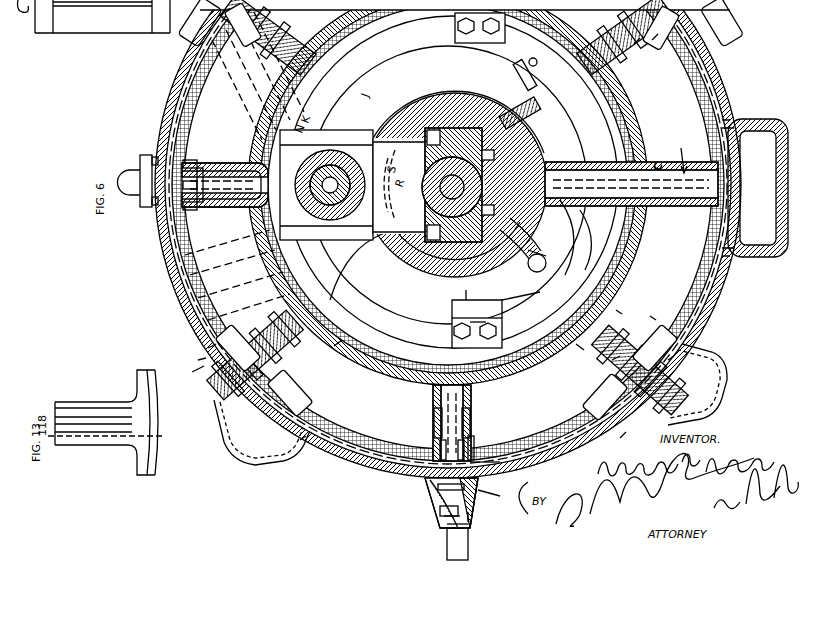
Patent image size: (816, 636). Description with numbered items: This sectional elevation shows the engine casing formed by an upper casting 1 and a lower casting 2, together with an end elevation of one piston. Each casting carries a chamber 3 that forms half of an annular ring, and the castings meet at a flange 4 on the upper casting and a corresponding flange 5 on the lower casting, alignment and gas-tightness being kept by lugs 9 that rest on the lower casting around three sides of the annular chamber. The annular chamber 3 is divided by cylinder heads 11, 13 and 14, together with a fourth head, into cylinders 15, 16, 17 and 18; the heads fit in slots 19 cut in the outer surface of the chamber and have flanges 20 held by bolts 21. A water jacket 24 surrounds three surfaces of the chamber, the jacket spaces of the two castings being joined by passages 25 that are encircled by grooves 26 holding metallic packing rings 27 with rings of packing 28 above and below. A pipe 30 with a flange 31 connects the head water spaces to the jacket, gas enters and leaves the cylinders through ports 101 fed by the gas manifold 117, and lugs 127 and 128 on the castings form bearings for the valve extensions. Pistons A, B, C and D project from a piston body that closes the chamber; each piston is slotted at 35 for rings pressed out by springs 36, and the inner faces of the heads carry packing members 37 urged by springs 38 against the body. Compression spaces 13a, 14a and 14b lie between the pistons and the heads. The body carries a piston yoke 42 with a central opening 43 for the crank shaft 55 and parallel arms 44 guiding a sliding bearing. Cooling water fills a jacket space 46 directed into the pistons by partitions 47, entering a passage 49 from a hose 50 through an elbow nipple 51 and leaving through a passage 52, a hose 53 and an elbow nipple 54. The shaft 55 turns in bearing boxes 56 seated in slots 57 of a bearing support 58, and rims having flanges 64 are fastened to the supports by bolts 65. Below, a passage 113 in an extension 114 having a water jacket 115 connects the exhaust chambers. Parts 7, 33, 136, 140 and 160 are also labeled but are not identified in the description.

In FIG. 6, the upper casting 1 is at (180, 306).
In FIG. 6, the lower casting 2 is at (716, 310).
In FIG. 6, the annular chamber 3 is at (418, 208).
In FIG. 6, the flange 4 is at (454, 515).
In FIG. 6, the flange 5 is at (500, 416).
In FIG. 6, the drain box 7 is at (457, 544).
In FIG. 6, the lugs 9 is at (472, 428).
In FIG. 6, the cylinder head 11 is at (389, 228).
In FIG. 6, the cylinder head 13 is at (610, 52).
In FIG. 6, the compression space 13a is at (640, 39).
In FIG. 6, the cylinder head 14 is at (256, 56).
In FIG. 6, the compression space 14a is at (609, 315).
In FIG. 6, the compression space 14b is at (643, 319).
In FIG. 6, the cylinder 15 is at (212, 220).
In FIG. 13, the cylinder 15 is at (146, 424).
In FIG. 6, the cylinder 16 is at (478, 498).
In FIG. 6, the cylinder 17 is at (459, 192).
In FIG. 6, the cylinder 18 is at (486, 447).
In FIG. 6, the slots 19 is at (206, 348).
In FIG. 6, the flanges 20 is at (196, 360).
In FIG. 6, the bolts 21 is at (190, 374).
In FIG. 6, the water jacket 24 is at (174, 114).
In FIG. 6, the passages 25 is at (434, 488).
In FIG. 6, the grooves 26 is at (448, 526).
In FIG. 6, the metallic packing rings 27 is at (470, 524).
In FIG. 6, the rings of packing 28 is at (438, 510).
In FIG. 6, the pipe 30 is at (461, 232).
In FIG. 6, the flanges 31 is at (300, 446).
In FIG. 6, the bolt 33 is at (508, 424).
In FIG. 6, the slots 35 is at (208, 148).
In FIG. 13, the slots 35 is at (80, 406).
In FIG. 6, the springs 36 is at (224, 164).
In FIG. 6, the packing members 37 is at (332, 350).
In FIG. 6, the springs 38 is at (320, 358).
In FIG. 6, the piston yoke 42 is at (448, 250).
In FIG. 6, the central circular opening 43 is at (428, 214).
In FIG. 6, the parallel arms 44 is at (298, 140).
In FIG. 6, the water jacket space 46 is at (352, 76).
In FIG. 6, the partitions 47 is at (228, 164).
In FIG. 6, the passage 49 is at (572, 168).
In FIG. 6, the hose 50 is at (474, 74).
In FIG. 6, the elbow nipple 51 is at (530, 96).
In FIG. 6, the passage 52 is at (550, 226).
In FIG. 6, the hose 53 is at (572, 237).
In FIG. 6, the elbow nipple 54 is at (544, 264).
In FIG. 6, the crank shaft 55 is at (498, 184).
In FIG. 6, the bearing boxes 56 is at (494, 164).
In FIG. 6, the slots 57 is at (481, 296).
In FIG. 6, the bearing support 58 is at (457, 299).
In FIG. 6, the flanges 64 is at (480, 314).
In FIG. 6, the bolts 65 is at (476, 180).
In FIG. 6, the ports 101 is at (447, 212).
In FIG. 6, the passage 113 is at (758, 188).
In FIG. 6, the extension 114 is at (742, 118).
In FIG. 6, the water jacket 115 is at (738, 258).
In FIG. 6, the gas manifold 117 is at (508, 498).
In FIG. 6, the lugs 127 is at (380, 252).
In FIG. 6, the lugs 128 is at (518, 293).
In FIG. 6, the flange 136 is at (646, 46).
In FIG. 6, the bolt 140 is at (612, 364).
In FIG. 6, the knob 160 is at (138, 172).